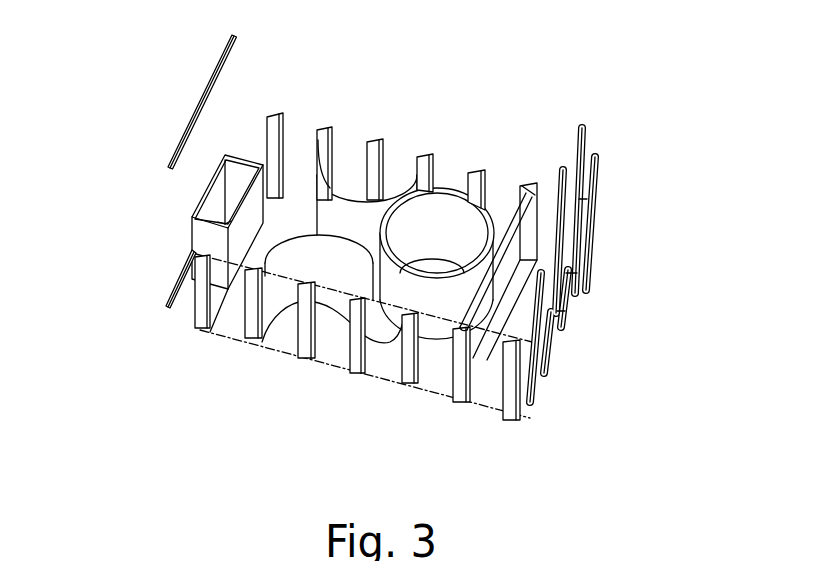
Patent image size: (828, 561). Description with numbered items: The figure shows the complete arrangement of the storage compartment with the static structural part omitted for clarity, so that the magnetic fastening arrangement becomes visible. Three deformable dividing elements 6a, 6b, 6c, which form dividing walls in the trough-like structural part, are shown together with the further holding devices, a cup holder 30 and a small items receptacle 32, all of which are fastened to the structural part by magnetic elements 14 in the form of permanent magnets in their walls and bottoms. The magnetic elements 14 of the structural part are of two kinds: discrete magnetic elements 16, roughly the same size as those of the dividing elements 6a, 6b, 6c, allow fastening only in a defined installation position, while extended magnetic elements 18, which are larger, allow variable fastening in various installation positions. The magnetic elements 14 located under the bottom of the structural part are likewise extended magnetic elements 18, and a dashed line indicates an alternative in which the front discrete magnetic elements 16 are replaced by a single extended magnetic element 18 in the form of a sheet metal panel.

The dividing element 6a is at (345, 217).
The dividing element 6b is at (474, 345).
The dividing element 6c is at (283, 292).
The magnetic element 14 is at (190, 120).
The discrete magnetic element 16 is at (473, 187).
The extended magnetic element 18 is at (175, 281).
The cup holder 30 is at (434, 333).
The small items receptacle 32 is at (235, 182).